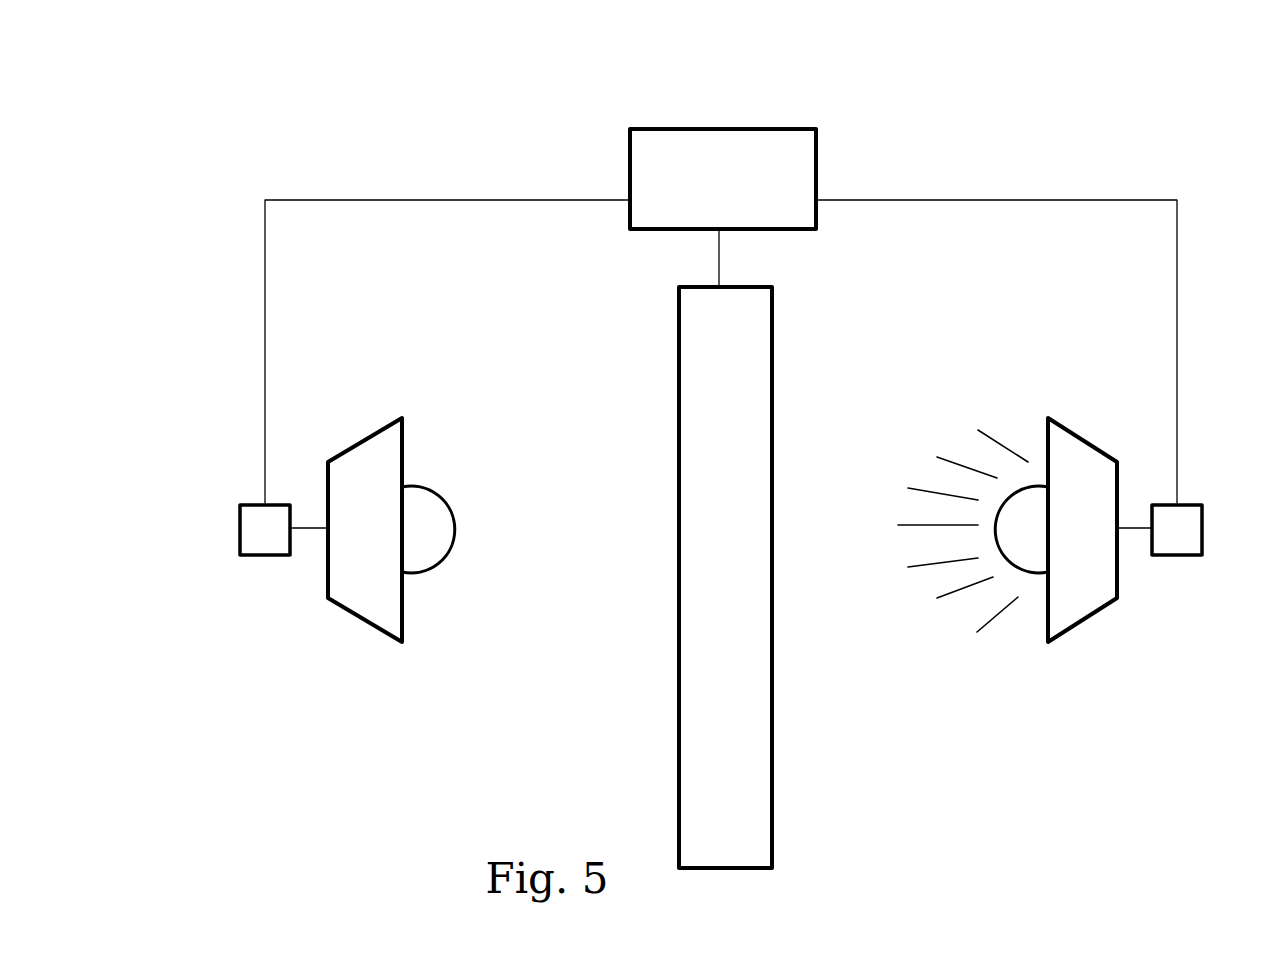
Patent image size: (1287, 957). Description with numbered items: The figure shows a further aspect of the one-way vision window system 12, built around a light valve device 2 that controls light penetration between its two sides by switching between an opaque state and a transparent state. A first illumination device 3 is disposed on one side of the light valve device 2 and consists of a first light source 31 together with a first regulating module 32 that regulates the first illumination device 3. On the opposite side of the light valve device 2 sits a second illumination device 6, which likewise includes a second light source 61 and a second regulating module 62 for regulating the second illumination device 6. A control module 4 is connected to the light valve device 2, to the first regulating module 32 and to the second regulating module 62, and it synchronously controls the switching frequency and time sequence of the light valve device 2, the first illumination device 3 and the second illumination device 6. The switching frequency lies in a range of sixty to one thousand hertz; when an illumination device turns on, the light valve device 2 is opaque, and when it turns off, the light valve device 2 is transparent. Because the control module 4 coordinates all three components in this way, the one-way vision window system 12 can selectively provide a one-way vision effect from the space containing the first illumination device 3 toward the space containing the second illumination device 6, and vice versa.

The one-way vision window system 12 is at (268, 172).
The control module 4 is at (708, 147).
The light valve device 2 is at (740, 477).
The first illumination device 3 is at (315, 565).
The first light source 31 is at (370, 450).
The first regulating module 32 is at (253, 542).
The second illumination device 6 is at (1092, 565).
The second light source 61 is at (1077, 450).
The second regulating module 62 is at (1188, 541).